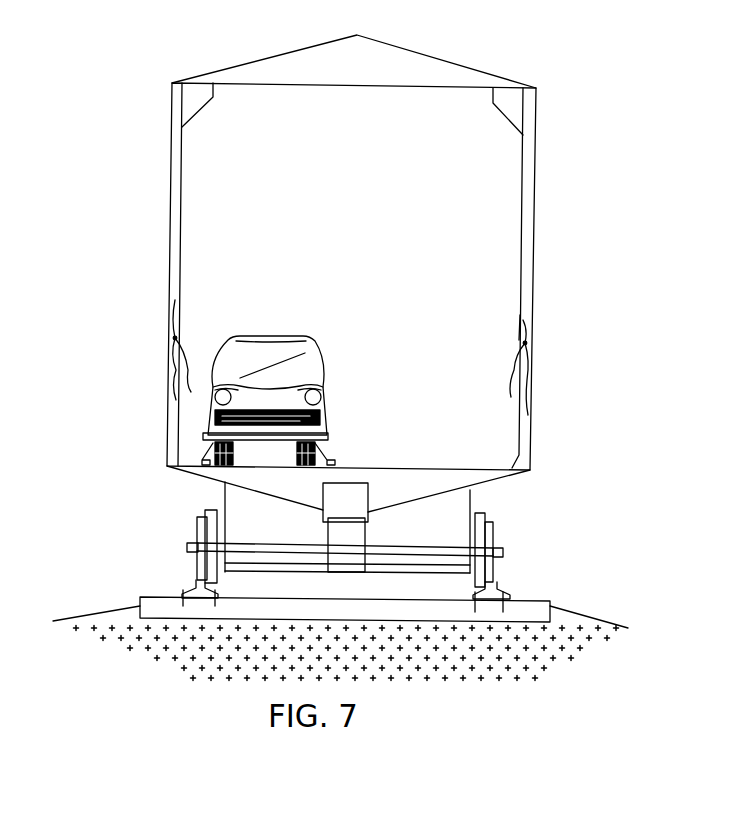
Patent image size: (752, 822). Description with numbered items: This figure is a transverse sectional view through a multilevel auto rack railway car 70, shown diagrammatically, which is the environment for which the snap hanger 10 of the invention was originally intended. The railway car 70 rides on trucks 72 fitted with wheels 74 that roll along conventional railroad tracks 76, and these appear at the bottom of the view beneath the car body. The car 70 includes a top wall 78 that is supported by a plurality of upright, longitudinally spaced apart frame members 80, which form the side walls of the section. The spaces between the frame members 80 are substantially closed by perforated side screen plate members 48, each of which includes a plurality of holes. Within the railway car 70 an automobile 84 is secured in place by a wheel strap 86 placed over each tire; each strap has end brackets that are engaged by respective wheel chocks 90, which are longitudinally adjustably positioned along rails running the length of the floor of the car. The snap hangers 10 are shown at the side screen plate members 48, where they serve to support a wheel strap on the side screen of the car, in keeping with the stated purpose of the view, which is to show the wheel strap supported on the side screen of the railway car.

The snap hanger 10 is at (173, 338).
The perforated side screen plate member 48 is at (532, 323).
The multilevel auto rack railway car 70 is at (588, 143).
The truck 72 is at (448, 503).
The wheel 74 is at (203, 527).
The railroad track 76 is at (493, 592).
The top wall 78 is at (438, 65).
The upright frame member 80 is at (530, 198).
The automobile 84 is at (323, 357).
The wheel strap 86 is at (203, 460).
The wheel chock 90 is at (199, 462).